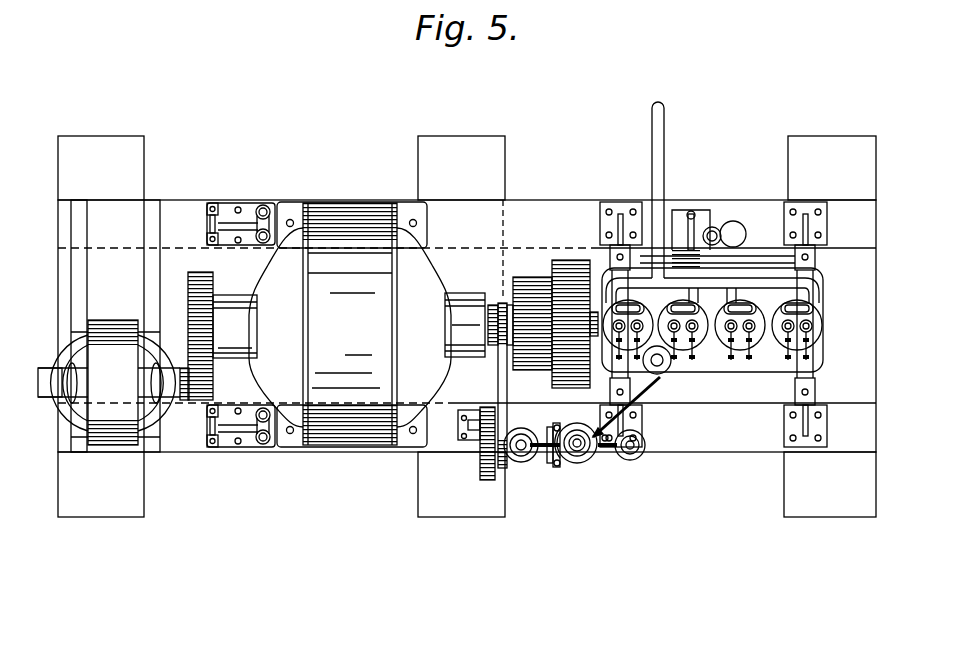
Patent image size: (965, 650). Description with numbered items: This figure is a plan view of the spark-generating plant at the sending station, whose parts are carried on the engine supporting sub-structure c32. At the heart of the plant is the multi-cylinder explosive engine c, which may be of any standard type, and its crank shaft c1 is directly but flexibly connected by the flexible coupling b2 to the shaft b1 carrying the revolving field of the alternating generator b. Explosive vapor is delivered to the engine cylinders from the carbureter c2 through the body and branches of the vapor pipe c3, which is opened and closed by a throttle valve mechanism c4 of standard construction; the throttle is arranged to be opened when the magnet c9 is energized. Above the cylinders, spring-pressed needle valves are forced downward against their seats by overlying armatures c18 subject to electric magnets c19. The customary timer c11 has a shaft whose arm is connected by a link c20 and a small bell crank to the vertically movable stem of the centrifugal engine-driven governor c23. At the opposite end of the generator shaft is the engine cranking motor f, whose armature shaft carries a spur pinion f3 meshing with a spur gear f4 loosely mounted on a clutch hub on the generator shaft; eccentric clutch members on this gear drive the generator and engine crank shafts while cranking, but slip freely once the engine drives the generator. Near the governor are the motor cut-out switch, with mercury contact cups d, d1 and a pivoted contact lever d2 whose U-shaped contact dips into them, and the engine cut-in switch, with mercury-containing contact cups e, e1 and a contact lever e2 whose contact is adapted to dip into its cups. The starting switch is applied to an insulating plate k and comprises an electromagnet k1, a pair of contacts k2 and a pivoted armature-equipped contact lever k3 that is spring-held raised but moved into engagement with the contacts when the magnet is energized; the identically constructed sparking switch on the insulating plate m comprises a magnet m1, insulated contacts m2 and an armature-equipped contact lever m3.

The engine supporting sub-structure c32 is at (858, 473).
The engine cranking motor f is at (108, 335).
The spur pinion f3 is at (196, 398).
The spur gear f4 is at (210, 300).
The insulating plate k is at (273, 205).
The electromagnet k1 is at (259, 206).
The contacts k2 is at (207, 236).
The contact lever k3 is at (227, 226).
The insulating plate m is at (272, 444).
The magnet m1 is at (262, 446).
The insulated contacts m2 is at (209, 435).
The contact lever m3 is at (232, 437).
The alternating generator b is at (340, 242).
The shaft b1 is at (498, 312).
The flexible coupling b2 is at (535, 296).
The crank shaft c1 is at (573, 276).
The contact lever d2 is at (528, 432).
The contact lever e2 is at (523, 462).
The mercury-containing contact cup e is at (550, 466).
The mercury contact cup d is at (550, 430).
The mercury contact cup d1 is at (561, 434).
The mercury-containing contact cup e1 is at (580, 463).
The centrifugal engine-driven governor c23 is at (630, 460).
The link c20 is at (648, 385).
The timer c11 is at (668, 368).
The explosive engine c is at (713, 324).
The electric magnets c19 is at (822, 325).
The armatures c18 is at (813, 308).
The vapor pipe c3 is at (805, 292).
The magnet c9 is at (717, 262).
The throttle valve mechanism c4 is at (716, 230).
The carbureter c2 is at (738, 226).